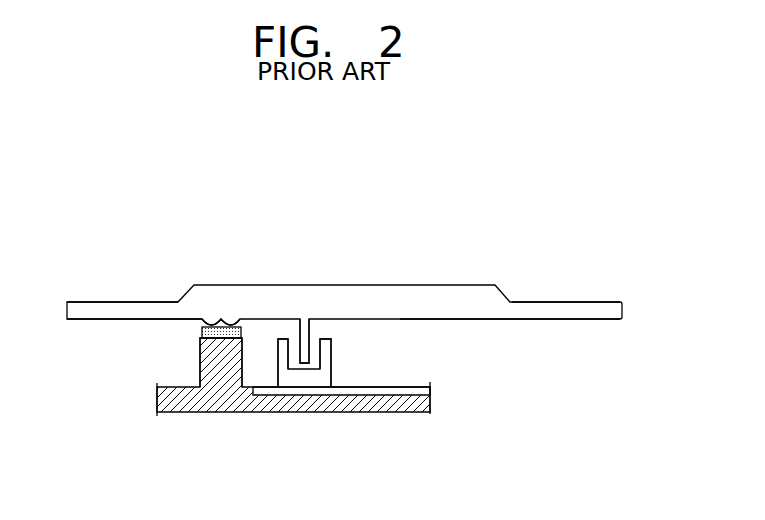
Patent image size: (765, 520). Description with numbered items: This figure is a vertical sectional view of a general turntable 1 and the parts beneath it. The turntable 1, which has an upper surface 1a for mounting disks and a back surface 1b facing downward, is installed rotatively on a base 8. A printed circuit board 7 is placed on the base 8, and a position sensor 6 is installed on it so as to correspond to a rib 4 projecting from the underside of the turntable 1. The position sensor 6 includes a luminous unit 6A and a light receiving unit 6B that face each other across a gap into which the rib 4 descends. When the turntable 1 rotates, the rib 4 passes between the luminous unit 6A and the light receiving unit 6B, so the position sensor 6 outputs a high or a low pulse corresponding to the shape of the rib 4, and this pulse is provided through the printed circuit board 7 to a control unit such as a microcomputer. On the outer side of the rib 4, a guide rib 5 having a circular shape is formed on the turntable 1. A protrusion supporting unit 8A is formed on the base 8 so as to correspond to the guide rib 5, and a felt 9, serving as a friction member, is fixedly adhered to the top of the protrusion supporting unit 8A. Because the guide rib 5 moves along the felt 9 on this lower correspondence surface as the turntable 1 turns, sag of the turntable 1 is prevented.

The turntable 1 is at (462, 285).
The upper surface 1a is at (565, 303).
The back surface 1b is at (567, 319).
The rib 4 is at (305, 337).
The guide rib 5 is at (213, 321).
The position sensor 6 is at (312, 375).
The luminous unit 6A is at (279, 358).
The light receiving unit 6B is at (327, 357).
The printed circuit board 7 is at (345, 392).
The base 8 is at (273, 405).
The protrusion supporting unit 8A is at (205, 365).
The felt 9 is at (201, 330).